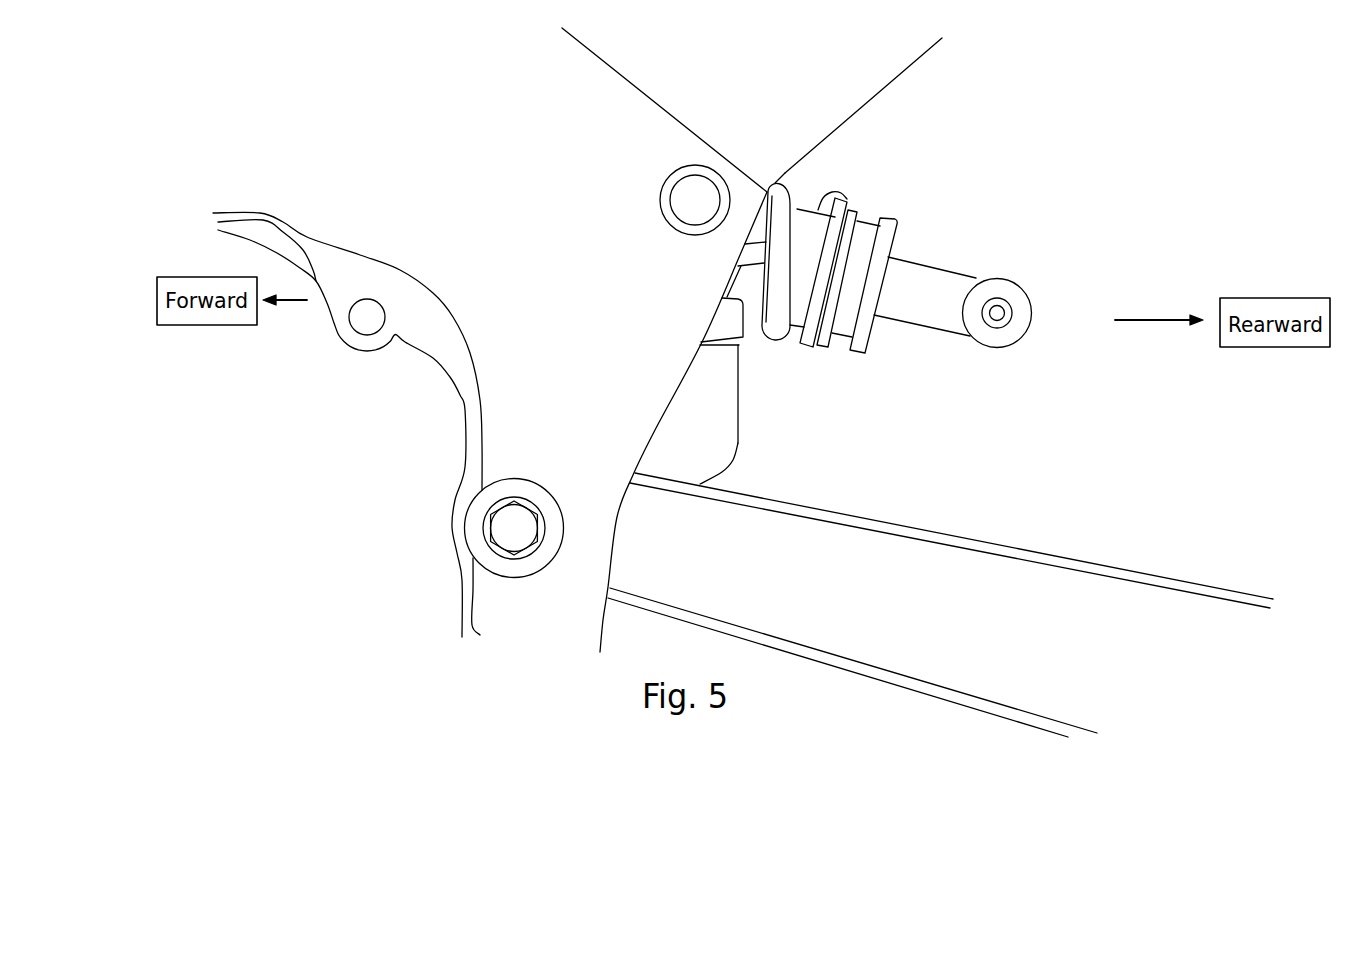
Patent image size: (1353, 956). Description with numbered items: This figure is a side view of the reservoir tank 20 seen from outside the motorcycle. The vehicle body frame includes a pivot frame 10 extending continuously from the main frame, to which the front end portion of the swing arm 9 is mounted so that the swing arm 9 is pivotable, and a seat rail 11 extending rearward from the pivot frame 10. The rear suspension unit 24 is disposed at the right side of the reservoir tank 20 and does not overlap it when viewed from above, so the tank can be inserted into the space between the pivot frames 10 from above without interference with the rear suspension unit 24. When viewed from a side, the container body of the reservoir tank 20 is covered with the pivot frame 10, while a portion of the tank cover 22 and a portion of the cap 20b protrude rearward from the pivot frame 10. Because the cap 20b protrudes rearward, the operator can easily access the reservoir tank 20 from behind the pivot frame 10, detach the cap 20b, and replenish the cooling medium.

The swing arm 9 is at (1082, 560).
The pivot frame 10 is at (465, 412).
The seat rail 11 is at (837, 73).
The reservoir tank 20 is at (885, 331).
The cap 20b is at (743, 335).
The tank cover 22 is at (738, 398).
The rear suspension unit 24 is at (948, 333).